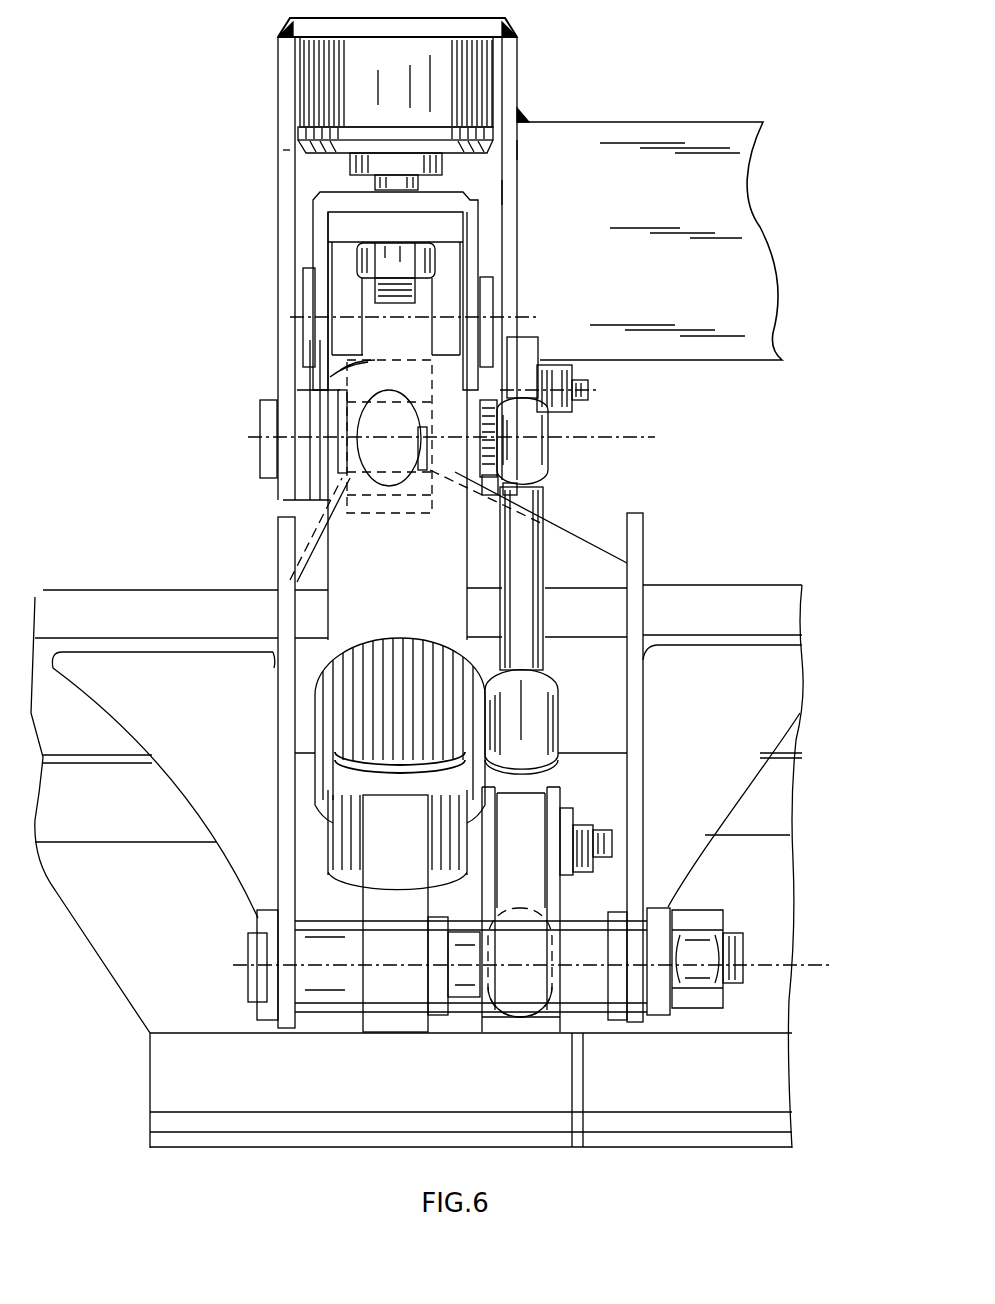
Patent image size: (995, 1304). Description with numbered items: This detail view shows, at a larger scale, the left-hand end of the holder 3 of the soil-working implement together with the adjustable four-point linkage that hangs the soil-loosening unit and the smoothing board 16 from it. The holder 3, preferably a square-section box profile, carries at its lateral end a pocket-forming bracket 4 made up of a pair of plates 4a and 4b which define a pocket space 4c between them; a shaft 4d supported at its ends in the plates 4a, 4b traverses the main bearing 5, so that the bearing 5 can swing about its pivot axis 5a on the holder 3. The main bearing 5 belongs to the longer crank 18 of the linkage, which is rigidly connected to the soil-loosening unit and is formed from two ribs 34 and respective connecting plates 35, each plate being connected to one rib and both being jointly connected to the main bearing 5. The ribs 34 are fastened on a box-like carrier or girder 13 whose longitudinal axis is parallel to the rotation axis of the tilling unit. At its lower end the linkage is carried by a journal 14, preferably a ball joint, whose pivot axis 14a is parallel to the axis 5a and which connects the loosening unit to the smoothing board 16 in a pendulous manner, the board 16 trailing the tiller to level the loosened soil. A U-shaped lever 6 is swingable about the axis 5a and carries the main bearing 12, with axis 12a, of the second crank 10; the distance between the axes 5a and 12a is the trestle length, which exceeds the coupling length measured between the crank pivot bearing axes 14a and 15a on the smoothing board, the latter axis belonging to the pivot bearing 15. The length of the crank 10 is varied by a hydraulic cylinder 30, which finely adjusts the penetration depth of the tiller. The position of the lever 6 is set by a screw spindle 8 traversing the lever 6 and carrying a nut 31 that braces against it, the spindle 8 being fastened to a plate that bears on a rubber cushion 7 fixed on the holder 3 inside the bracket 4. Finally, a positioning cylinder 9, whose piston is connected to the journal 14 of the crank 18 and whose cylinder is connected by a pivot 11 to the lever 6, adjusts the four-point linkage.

The holder 3 is at (692, 150).
The pocket-forming bracket 4 is at (514, 84).
The plate 4a is at (517, 152).
The plate 4b is at (283, 150).
The pocket space 4c is at (485, 195).
The shaft 4d is at (437, 480).
The main bearing 5 is at (385, 452).
The pivot axis 5a is at (640, 432).
The lever 6 is at (478, 226).
The rubber cushion 7 is at (303, 94).
The screw spindle 8 is at (395, 296).
The positioning cylinder 9 is at (357, 573).
The crank 10 is at (545, 570).
The pivot 11 is at (455, 312).
The main bearing 12 is at (540, 358).
The axis 12a is at (580, 396).
The carrier or girder 13 is at (118, 600).
The journal 14 is at (345, 995).
The pivot axis 14a is at (308, 968).
The bolt 15 is at (600, 815).
The crank pivot bearing axis 15a is at (522, 845).
The smoothing board 16 is at (508, 1082).
The crank 18 is at (280, 548).
The hydraulic cylinder 30 is at (540, 722).
The nut 31 is at (383, 258).
The ribs 34 is at (278, 732).
The connecting plates 35 is at (565, 520).